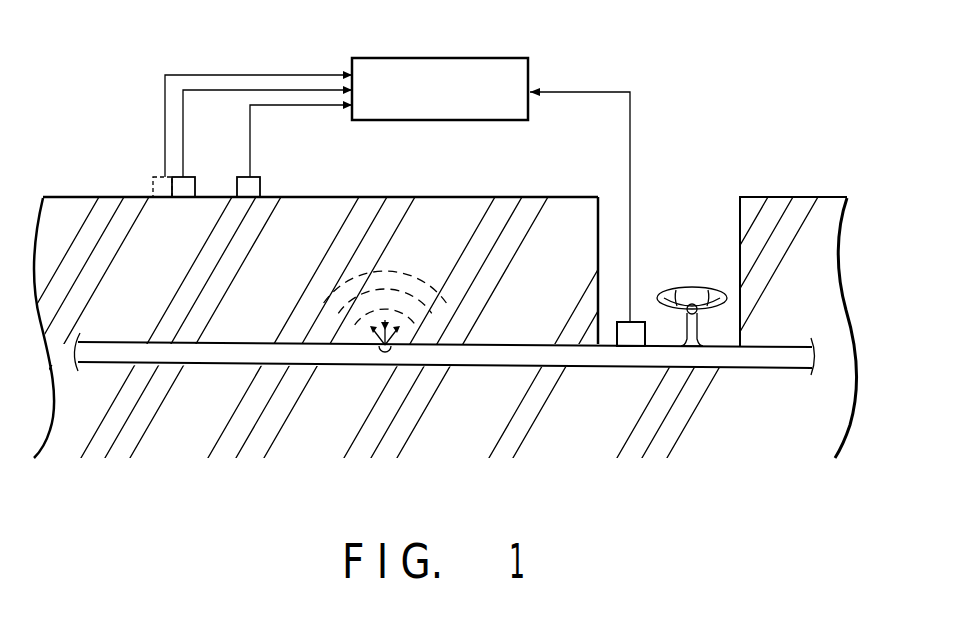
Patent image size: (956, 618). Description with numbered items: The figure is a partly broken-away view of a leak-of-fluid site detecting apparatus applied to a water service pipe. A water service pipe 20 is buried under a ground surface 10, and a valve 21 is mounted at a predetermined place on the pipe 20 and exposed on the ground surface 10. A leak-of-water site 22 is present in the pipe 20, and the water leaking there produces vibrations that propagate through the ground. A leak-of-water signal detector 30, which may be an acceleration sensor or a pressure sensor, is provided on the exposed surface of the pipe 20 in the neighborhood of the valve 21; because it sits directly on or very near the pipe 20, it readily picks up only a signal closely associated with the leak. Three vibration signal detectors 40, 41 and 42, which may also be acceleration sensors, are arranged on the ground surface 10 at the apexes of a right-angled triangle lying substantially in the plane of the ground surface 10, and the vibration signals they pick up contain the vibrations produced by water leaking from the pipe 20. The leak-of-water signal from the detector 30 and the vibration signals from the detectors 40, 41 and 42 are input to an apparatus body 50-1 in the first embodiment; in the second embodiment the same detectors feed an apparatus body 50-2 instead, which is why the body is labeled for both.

The ground surface 10 is at (78, 196).
The water service pipe 20 is at (593, 359).
The valve 21 is at (691, 287).
The leak-of-water site 22 is at (379, 352).
The leak-of-water signal detector 30 is at (641, 320).
The vibration signal detector 40 is at (153, 193).
The vibration signal detector 41 is at (197, 187).
The vibration signal detector 42 is at (262, 186).
The apparatus body 50-1 is at (534, 87).
The apparatus body 50-2 is at (530, 72).